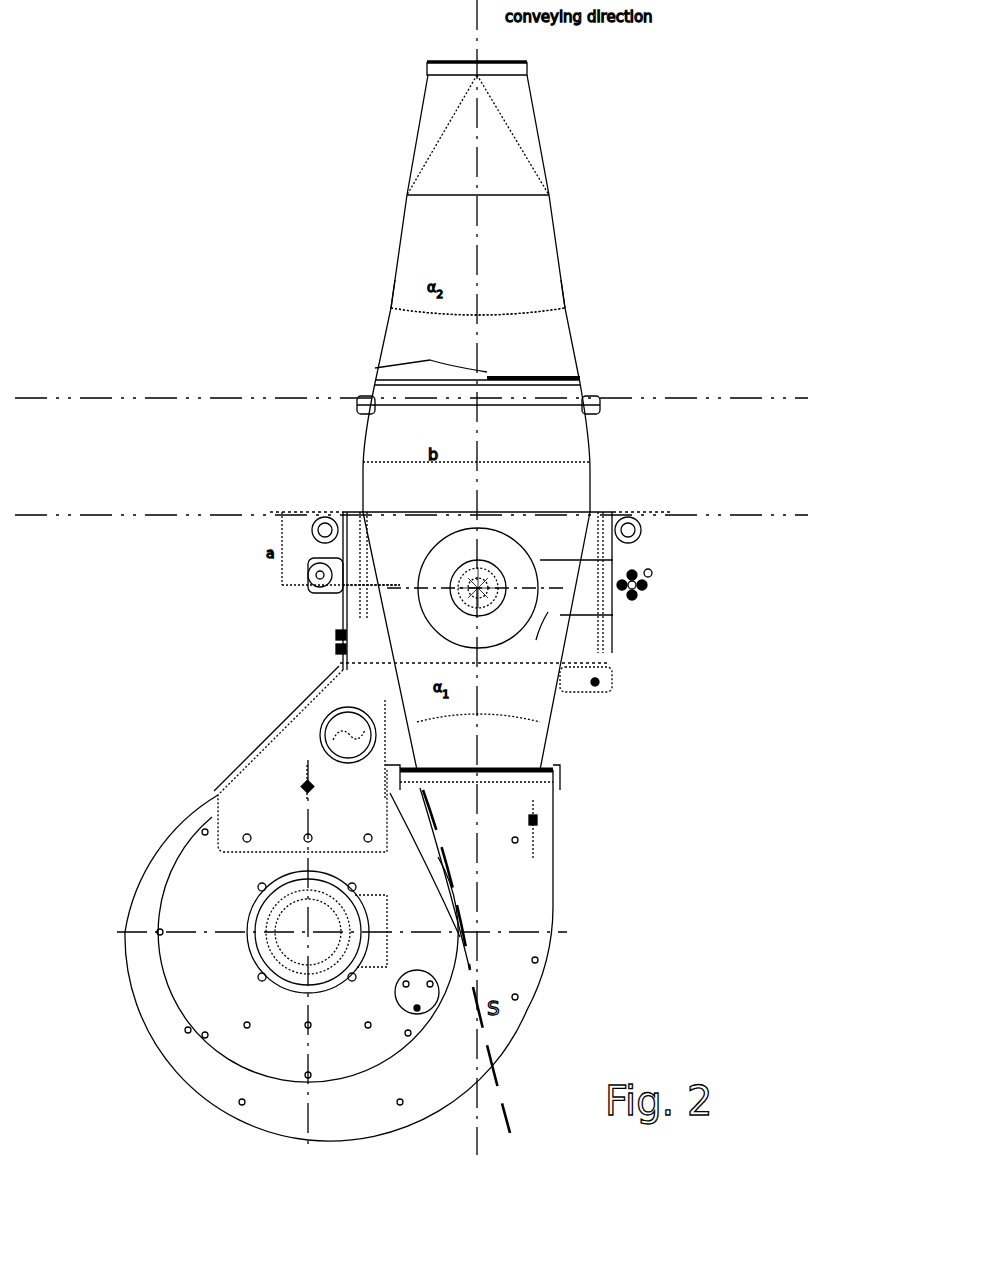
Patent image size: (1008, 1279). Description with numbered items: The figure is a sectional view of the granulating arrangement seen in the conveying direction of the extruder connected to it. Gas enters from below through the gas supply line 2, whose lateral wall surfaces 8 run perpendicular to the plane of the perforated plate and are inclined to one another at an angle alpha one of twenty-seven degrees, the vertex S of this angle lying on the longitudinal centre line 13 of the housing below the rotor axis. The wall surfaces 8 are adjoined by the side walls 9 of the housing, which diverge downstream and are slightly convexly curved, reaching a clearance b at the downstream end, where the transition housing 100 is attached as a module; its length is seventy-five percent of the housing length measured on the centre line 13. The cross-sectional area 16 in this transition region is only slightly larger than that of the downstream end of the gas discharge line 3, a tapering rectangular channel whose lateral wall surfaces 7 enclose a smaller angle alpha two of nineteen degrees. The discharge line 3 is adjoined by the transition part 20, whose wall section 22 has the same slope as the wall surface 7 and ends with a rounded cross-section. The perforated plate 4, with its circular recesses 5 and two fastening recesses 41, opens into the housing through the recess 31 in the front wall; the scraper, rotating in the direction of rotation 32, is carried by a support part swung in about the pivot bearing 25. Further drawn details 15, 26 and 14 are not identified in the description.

The transition part 20 is at (570, 92).
The wall section 22 is at (413, 142).
The gas discharge line 3 is at (563, 247).
The lateral wall surfaces of the gas discharge line 7 is at (392, 282).
The transition housing 100 is at (592, 438).
The upper housing part 15 is at (455, 509).
The cross-sectional area 16 is at (566, 508).
The perforated plate 4 is at (455, 575).
The recesses 5 is at (460, 605).
The fastening recesses 41 is at (490, 610).
The recess in the front wall 31 is at (513, 568).
The pivot bearing 25 is at (322, 582).
The fastening bolts 26 is at (660, 589).
The side walls of the housing 9 is at (377, 610).
The direction of rotation 32 is at (538, 636).
The lateral wall surfaces of the gas supply line 8 is at (405, 702).
The gas supply line 2 is at (556, 750).
The blower housing 14 is at (537, 840).
The centre line of the housing 13 is at (480, 888).